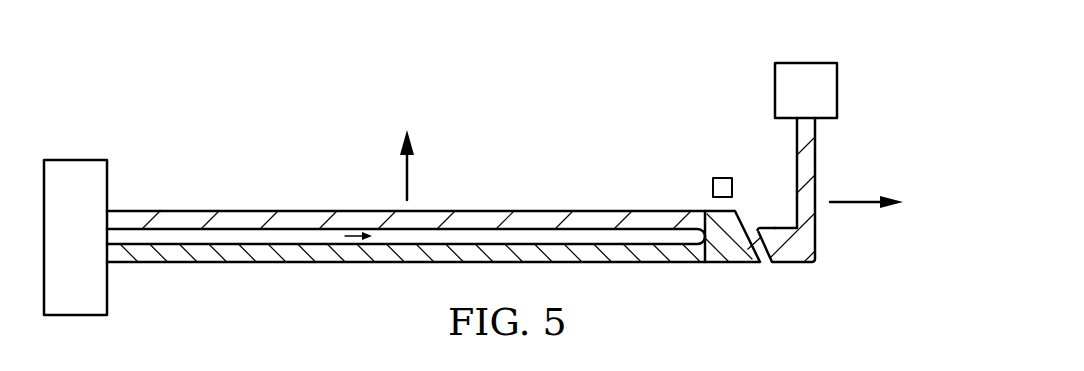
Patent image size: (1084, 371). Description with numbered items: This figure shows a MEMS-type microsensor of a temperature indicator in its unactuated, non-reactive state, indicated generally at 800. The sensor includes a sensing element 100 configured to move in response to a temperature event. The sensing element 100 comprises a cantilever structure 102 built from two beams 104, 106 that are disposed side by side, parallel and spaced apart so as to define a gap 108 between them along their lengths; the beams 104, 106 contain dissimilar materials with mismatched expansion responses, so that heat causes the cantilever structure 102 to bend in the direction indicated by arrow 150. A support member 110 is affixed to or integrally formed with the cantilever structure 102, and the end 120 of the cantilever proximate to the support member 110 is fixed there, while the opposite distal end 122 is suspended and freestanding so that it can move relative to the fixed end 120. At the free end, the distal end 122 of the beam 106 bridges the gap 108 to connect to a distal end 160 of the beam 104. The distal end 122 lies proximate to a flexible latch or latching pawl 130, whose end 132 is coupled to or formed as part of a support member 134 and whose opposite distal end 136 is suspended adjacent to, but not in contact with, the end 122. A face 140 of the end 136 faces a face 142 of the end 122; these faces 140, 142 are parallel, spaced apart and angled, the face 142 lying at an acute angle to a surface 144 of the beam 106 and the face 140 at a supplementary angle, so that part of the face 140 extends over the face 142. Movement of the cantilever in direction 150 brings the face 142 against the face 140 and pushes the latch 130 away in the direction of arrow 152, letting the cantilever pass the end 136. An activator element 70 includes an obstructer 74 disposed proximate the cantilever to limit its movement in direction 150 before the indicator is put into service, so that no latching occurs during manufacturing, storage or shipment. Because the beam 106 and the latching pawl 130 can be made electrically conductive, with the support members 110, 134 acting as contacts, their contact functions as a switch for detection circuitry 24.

The sensing device assembly 800 is at (350, 107).
The sensing element 100 is at (216, 288).
The support member 110 is at (97, 252).
The end of cantilever proximate to support member 120 is at (120, 200).
The cantilever structure 102 is at (548, 194).
The beam 104 is at (245, 222).
The beam 106 is at (328, 252).
The gap 108 is at (343, 228).
The surface of beam 144 is at (595, 263).
The distal end of cantilever 122 is at (740, 200).
The face of latch end 140 is at (748, 262).
The distal end of beam 160 is at (687, 263).
The activator element 70 is at (703, 185).
The obstructer 74 is at (717, 178).
The arrow 150 is at (410, 172).
The latch or latching pawl 130 is at (894, 177).
The support member 134 is at (828, 105).
The end of latch 132 is at (828, 132).
The distal end of latch 136 is at (782, 277).
The face of cantilever end 142 is at (760, 228).
The arrow 152 is at (857, 203).
The detection circuitry 24 is at (714, 313).